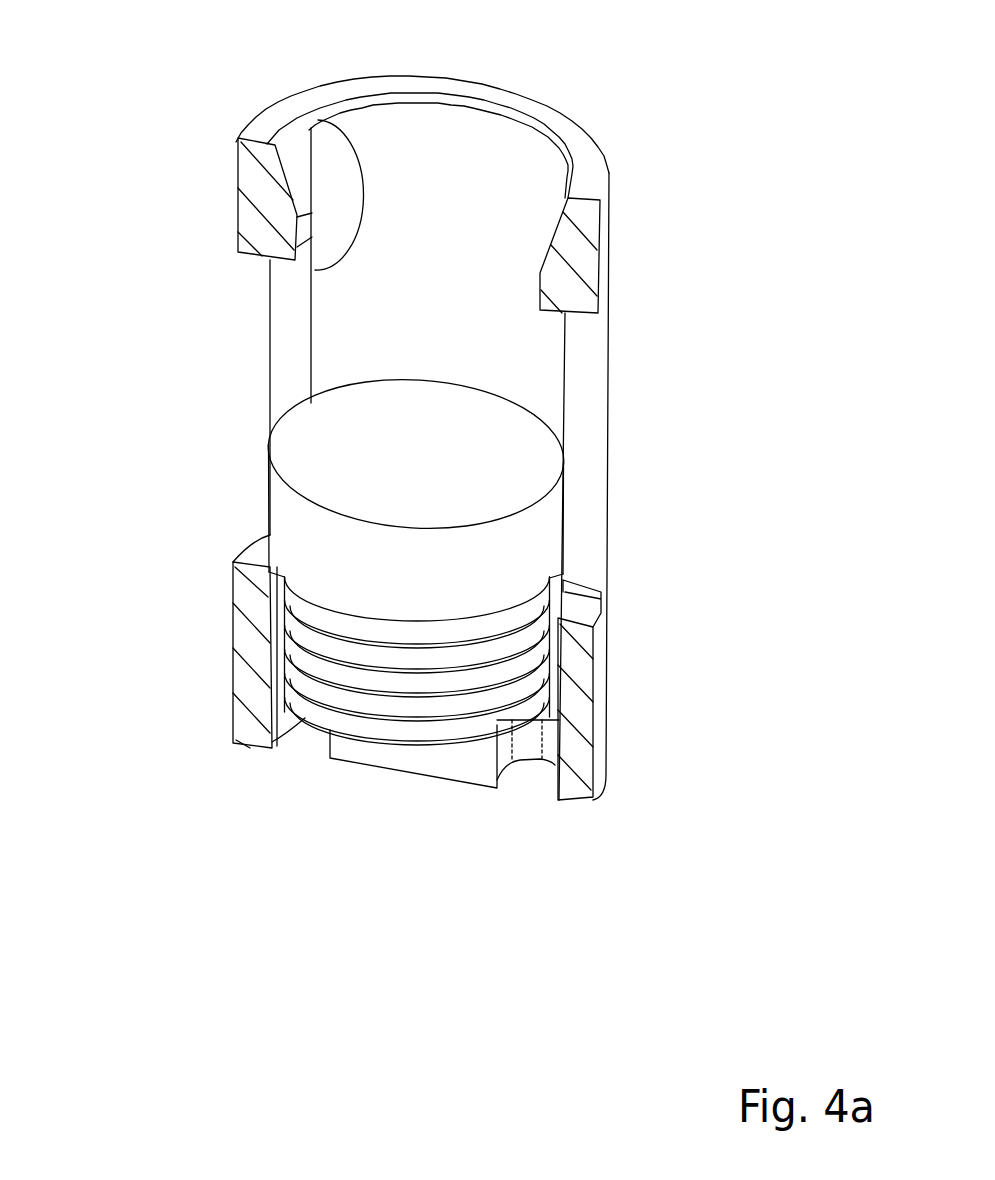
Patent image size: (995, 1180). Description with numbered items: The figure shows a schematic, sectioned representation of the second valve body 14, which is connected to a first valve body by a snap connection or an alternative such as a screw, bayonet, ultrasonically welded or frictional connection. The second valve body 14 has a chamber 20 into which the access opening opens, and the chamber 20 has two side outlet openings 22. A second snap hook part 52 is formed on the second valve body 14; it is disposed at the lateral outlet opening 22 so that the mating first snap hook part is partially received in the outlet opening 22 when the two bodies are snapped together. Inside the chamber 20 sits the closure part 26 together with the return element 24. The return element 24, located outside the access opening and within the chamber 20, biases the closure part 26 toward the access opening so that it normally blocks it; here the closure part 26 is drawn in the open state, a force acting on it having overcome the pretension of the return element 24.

The chamber 20 is at (472, 347).
The lateral outlet opening 22 is at (289, 356).
The second snap hook part 52 is at (324, 163).
The second valve body 14 is at (577, 703).
The closure part 26 is at (328, 467).
The return element 24 is at (333, 667).